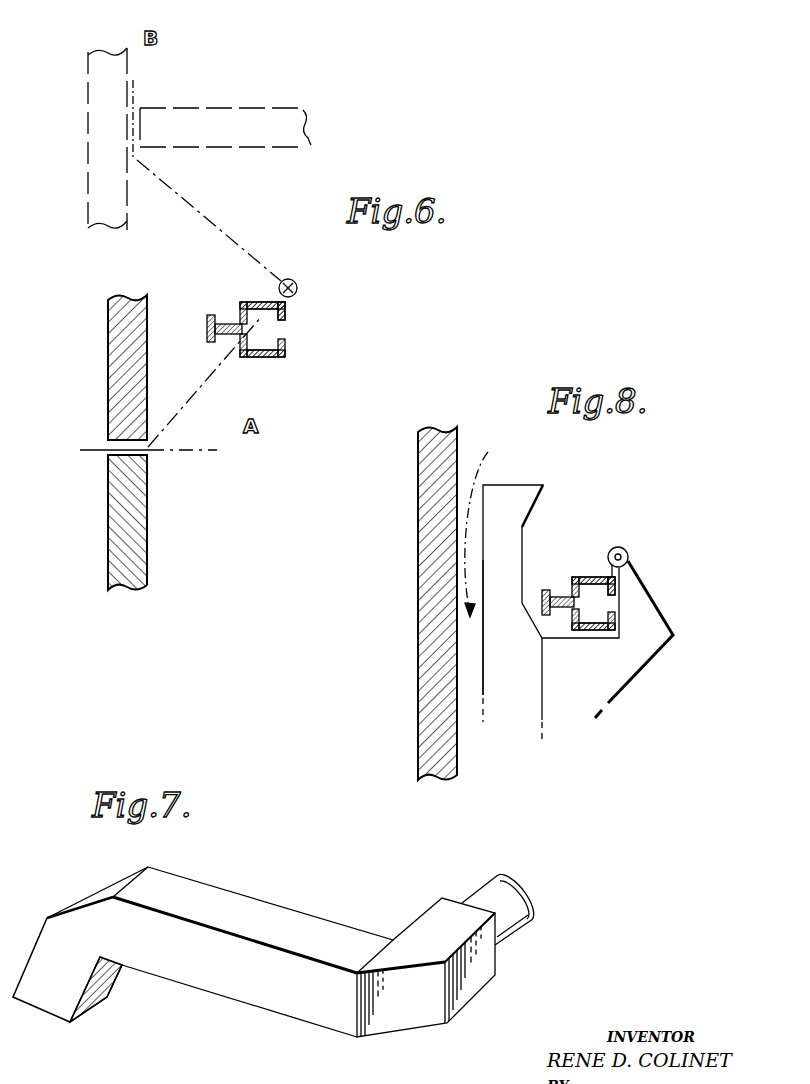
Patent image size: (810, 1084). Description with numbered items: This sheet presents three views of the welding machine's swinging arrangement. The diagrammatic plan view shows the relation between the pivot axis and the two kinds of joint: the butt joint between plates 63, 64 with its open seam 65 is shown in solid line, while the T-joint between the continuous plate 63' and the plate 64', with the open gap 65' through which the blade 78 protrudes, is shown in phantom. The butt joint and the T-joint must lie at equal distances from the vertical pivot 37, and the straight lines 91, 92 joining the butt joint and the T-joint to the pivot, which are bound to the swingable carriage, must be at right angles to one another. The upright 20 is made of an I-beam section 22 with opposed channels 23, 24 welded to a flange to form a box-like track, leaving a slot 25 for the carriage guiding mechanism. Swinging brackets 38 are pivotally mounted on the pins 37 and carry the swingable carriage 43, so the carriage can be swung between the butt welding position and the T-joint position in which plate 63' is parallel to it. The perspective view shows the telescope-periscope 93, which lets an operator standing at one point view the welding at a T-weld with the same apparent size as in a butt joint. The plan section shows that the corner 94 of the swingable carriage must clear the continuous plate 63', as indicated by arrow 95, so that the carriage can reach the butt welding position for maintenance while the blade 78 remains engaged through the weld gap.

In FIG. 6, the upright 20 is at (262, 357).
In FIG. 8, the upright 20 is at (578, 577).
In FIG. 6, the I-beam section 22 is at (210, 315).
In FIG. 8, the I-beam section 22 is at (545, 589).
In FIG. 6, the channel 23 is at (257, 302).
In FIG. 8, the channel 23 is at (592, 577).
In FIG. 6, the channel 24 is at (272, 357).
In FIG. 8, the channel 24 is at (568, 623).
In FIG. 6, the slot or opening 25 is at (280, 332).
In FIG. 8, the slot or opening 25 is at (610, 602).
In FIG. 6, the vertical pivot pin 37 is at (298, 285).
In FIG. 8, the vertical pivot pin 37 is at (628, 555).
In FIG. 8, the swinging bracket 38 is at (618, 639).
In FIG. 8, the swingable carriage 43 is at (501, 627).
In FIG. 6, the plate 63 is at (154, 522).
In FIG. 6, the continuous plate 63' is at (75, 139).
In FIG. 8, the continuous plate 63' is at (406, 603).
In FIG. 6, the plate 64 is at (98, 367).
In FIG. 6, the plate 64' is at (225, 110).
In FIG. 6, the open seam 65 is at (179, 468).
In FIG. 6, the open gap 65' is at (156, 195).
In FIG. 6, the blade 78 is at (133, 82).
In FIG. 6, the straight line 91 is at (205, 381).
In FIG. 6, the straight line 92 is at (217, 223).
In FIG. 7, the telescope-periscope 93 is at (268, 917).
In FIG. 8, the corner of the swingable carriage 94 is at (483, 458).
In FIG. 8, the arrow 95 is at (467, 538).